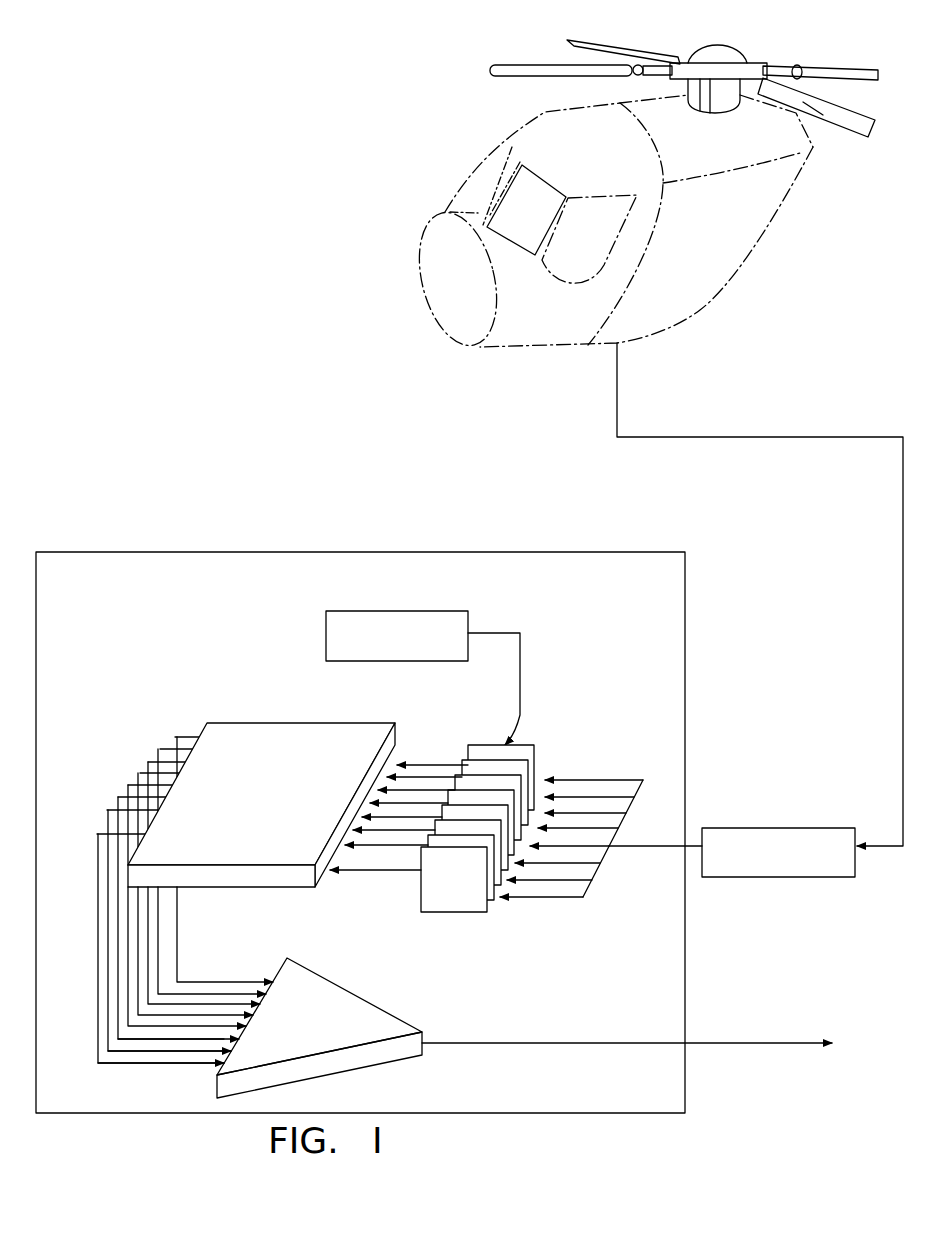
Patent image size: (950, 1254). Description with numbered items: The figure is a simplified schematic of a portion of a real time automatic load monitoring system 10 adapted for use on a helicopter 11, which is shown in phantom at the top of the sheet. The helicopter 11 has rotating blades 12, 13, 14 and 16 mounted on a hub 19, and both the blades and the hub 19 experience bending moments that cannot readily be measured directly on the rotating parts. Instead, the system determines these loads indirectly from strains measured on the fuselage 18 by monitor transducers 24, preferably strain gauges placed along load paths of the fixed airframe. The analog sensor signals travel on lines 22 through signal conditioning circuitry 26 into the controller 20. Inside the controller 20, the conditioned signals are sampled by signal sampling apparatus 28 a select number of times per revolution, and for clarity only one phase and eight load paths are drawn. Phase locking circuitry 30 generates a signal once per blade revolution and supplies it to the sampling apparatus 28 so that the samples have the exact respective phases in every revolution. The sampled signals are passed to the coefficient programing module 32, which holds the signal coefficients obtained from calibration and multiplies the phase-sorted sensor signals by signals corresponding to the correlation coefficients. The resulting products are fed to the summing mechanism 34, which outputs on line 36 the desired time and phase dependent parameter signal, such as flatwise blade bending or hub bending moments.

The real time automatic load monitoring system 10 is at (402, 388).
The helicopter 11 is at (713, 308).
The rotating blade 12 is at (637, 43).
The rotating blade 13 is at (537, 65).
The rotating blade 14 is at (845, 67).
The rotating blade 16 is at (857, 113).
The fuselage 18 is at (472, 205).
The hub 19 is at (718, 46).
The controller 20 is at (266, 578).
The lines 22 is at (902, 525).
The monitor transducers 24 is at (720, 118).
The signal conditioning circuitry 26 is at (812, 838).
The signal sampling apparatus 28 is at (484, 914).
The phase locking circuitry 30 is at (437, 625).
The coefficient programing module 32 is at (345, 735).
The summing mechanism 34 is at (313, 980).
The line 36 is at (606, 1043).